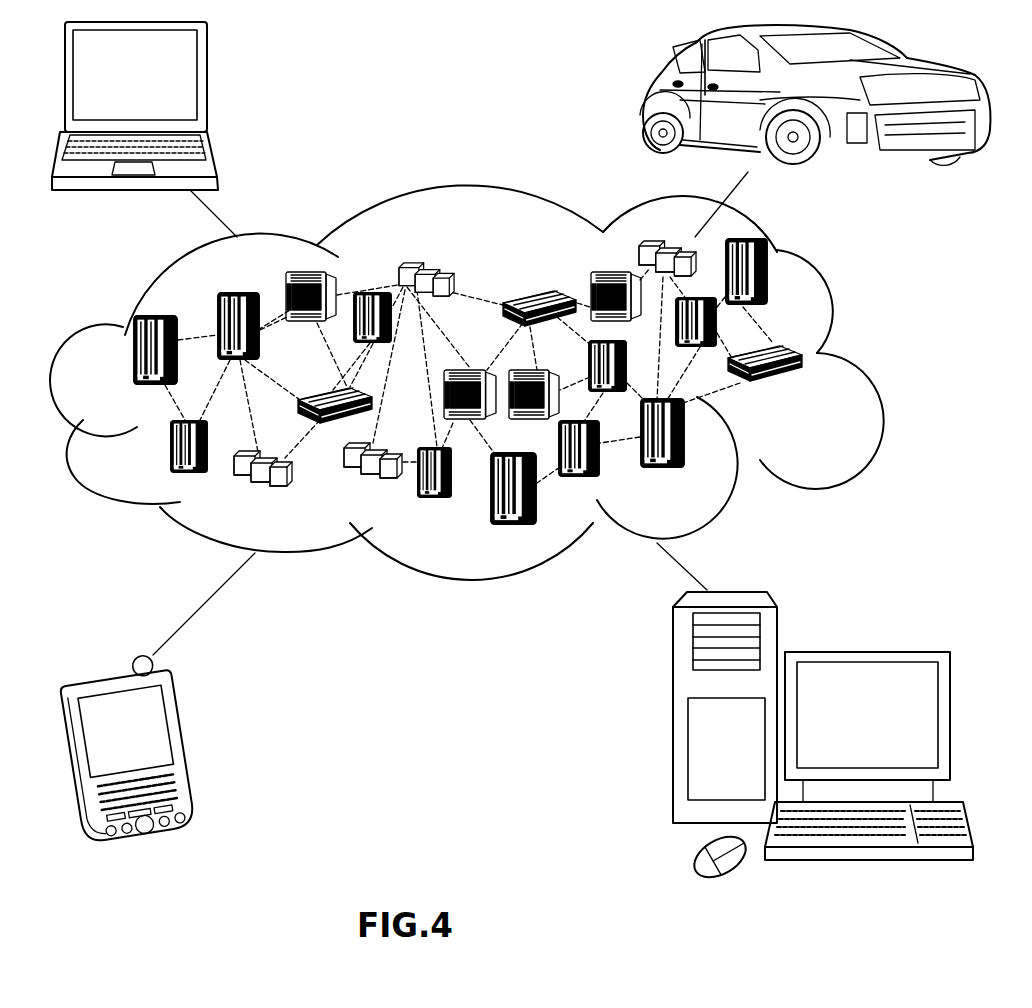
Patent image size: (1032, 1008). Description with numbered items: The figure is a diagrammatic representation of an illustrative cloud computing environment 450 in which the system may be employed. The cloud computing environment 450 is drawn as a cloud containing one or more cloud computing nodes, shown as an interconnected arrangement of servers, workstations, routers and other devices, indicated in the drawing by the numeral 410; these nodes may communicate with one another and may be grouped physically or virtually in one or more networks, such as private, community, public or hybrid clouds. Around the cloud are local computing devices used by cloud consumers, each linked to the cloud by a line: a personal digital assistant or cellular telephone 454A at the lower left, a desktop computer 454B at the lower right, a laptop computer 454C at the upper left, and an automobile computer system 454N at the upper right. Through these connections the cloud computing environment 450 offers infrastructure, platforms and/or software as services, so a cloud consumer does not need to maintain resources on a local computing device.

The laptop computer 454C is at (210, 82).
The automobile computer system 454N is at (645, 104).
The cloud computing environment 450 is at (866, 362).
The network of computing devices 410 is at (812, 389).
The personal digital assistant (PDA) or cellular telephone 454A is at (196, 742).
The desktop computer 454B is at (868, 652).